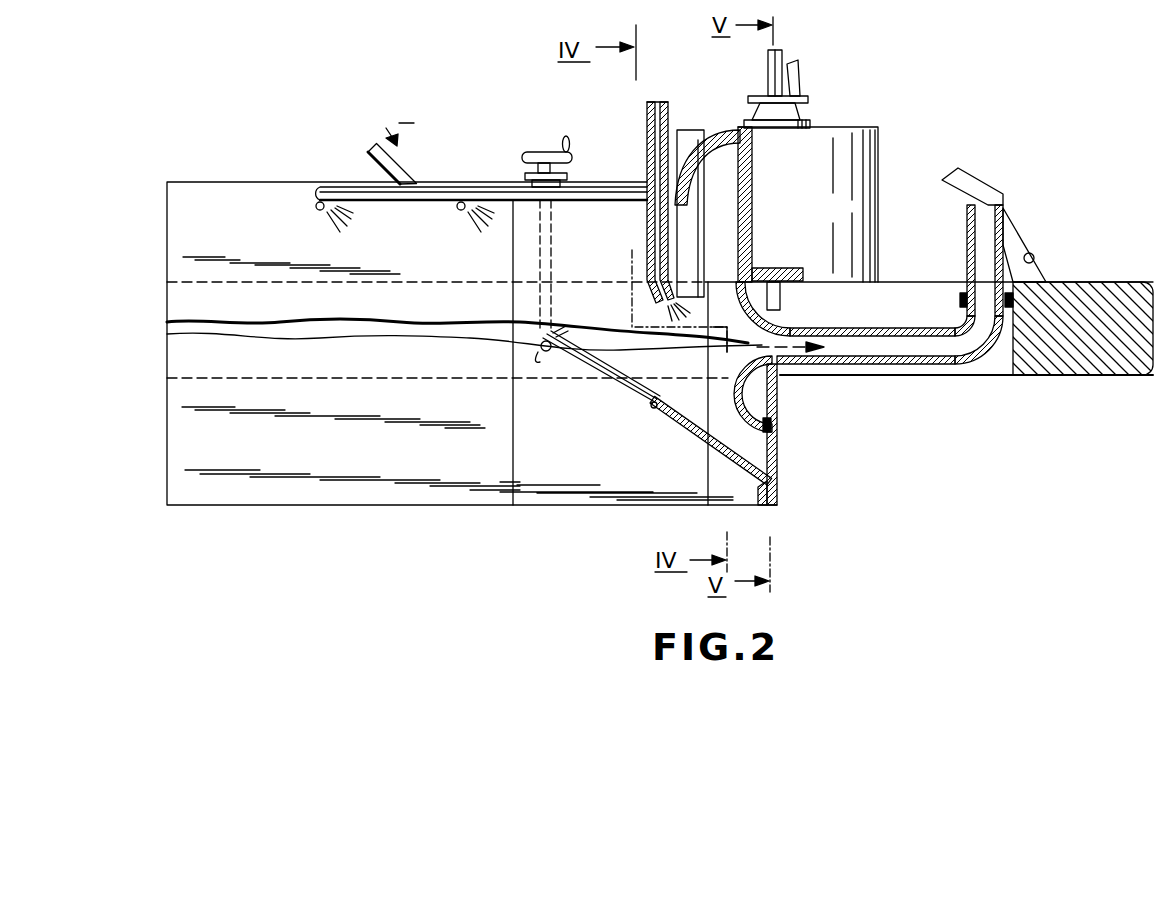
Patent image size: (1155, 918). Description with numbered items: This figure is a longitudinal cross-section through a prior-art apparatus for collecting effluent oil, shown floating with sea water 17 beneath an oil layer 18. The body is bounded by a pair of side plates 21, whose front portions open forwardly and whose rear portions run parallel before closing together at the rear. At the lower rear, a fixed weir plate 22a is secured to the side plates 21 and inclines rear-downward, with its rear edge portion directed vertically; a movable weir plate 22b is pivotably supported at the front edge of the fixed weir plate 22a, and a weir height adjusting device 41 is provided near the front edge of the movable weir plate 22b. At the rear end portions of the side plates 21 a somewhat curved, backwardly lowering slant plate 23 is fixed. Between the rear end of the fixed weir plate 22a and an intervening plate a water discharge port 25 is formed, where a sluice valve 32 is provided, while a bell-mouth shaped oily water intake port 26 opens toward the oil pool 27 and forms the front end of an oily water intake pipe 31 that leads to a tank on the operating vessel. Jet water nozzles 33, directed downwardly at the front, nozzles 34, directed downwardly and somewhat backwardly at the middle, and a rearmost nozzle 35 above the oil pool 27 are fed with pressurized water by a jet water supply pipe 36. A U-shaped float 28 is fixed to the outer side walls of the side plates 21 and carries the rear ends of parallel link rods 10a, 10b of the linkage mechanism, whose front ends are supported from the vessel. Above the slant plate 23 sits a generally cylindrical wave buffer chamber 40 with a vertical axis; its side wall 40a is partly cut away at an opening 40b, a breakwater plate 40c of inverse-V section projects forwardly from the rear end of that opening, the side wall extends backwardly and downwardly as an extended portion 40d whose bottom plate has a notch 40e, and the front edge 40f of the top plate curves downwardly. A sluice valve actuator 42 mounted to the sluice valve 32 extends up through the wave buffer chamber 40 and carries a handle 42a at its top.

The link rod 10a is at (975, 185).
The link rod 10b is at (405, 176).
The sea water 17 is at (273, 367).
The oil layer 18 is at (324, 326).
The side plate 21 is at (207, 200).
The fixed weir plate 22a is at (670, 410).
The movable weir plate 22b is at (575, 372).
The slant plate 23 is at (762, 301).
The water discharge port 25 is at (780, 465).
The oily water intake port 26 is at (765, 335).
The oil pool 27 is at (647, 372).
The U-shaped float 28 is at (1055, 350).
The oily water intake pipe 31 is at (900, 340).
The sluice valve 32 is at (783, 400).
The jet water nozzle 33 is at (310, 212).
The jet water nozzle 34 is at (460, 213).
The jet water nozzle 35 is at (642, 292).
The jet water supply pipe 36 is at (388, 203).
The wave buffer chamber 40 is at (913, 100).
The side wall 40a is at (860, 228).
The cut-away opening 40b is at (722, 186).
The breakwater plate 40c is at (752, 226).
The extended portion 40d is at (686, 233).
The notch 40e is at (746, 270).
The front edge 40f is at (690, 147).
The weir height adjusting device 41 is at (535, 152).
The sluice valve actuator 42 is at (766, 72).
The handle 42a is at (795, 80).